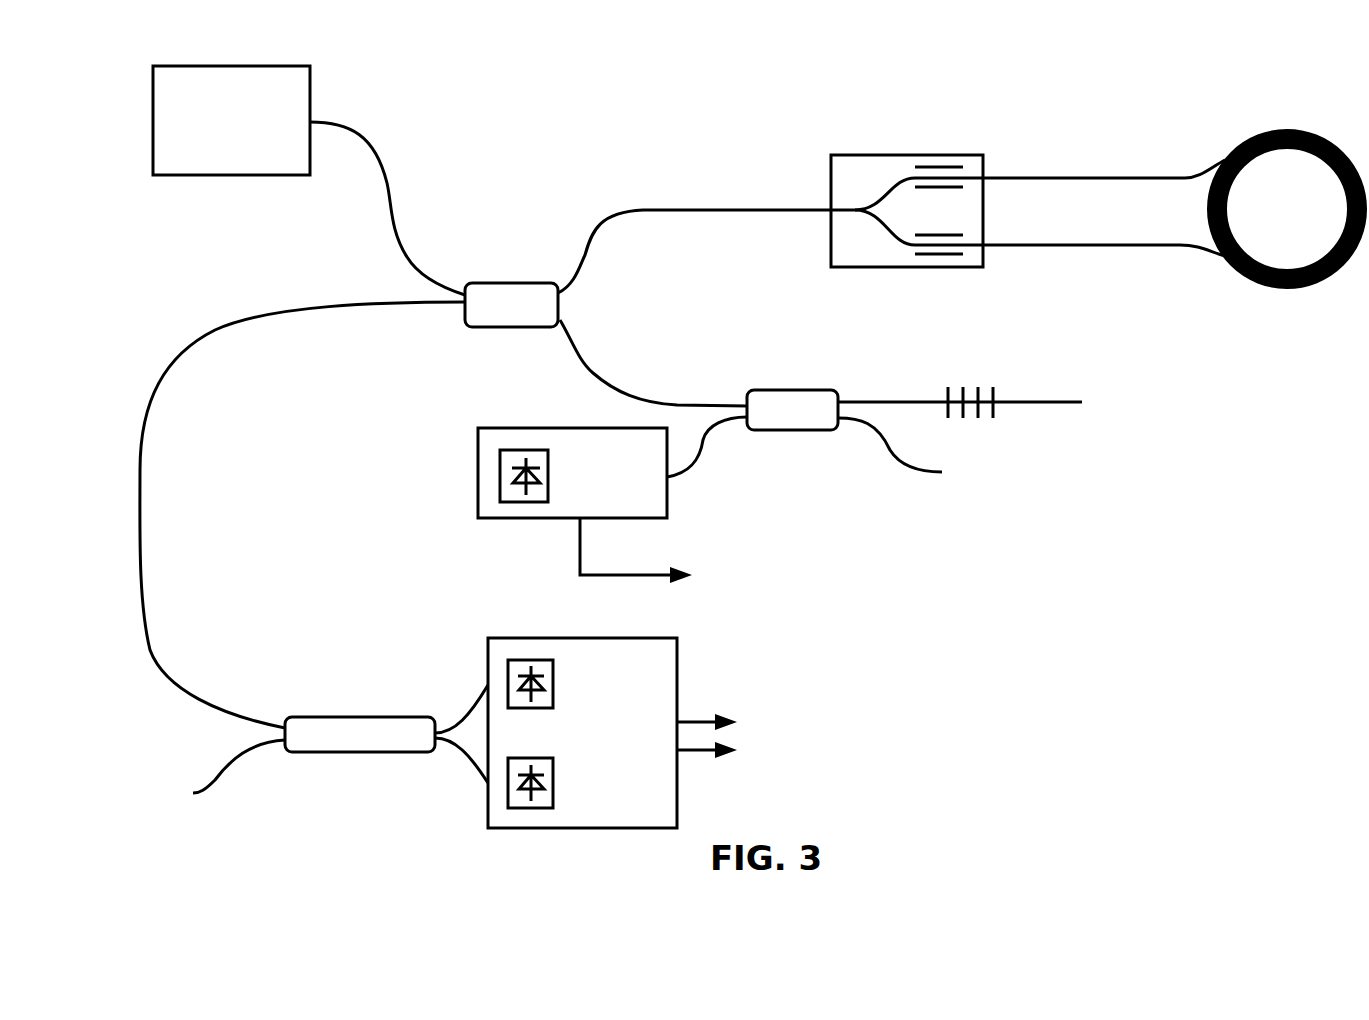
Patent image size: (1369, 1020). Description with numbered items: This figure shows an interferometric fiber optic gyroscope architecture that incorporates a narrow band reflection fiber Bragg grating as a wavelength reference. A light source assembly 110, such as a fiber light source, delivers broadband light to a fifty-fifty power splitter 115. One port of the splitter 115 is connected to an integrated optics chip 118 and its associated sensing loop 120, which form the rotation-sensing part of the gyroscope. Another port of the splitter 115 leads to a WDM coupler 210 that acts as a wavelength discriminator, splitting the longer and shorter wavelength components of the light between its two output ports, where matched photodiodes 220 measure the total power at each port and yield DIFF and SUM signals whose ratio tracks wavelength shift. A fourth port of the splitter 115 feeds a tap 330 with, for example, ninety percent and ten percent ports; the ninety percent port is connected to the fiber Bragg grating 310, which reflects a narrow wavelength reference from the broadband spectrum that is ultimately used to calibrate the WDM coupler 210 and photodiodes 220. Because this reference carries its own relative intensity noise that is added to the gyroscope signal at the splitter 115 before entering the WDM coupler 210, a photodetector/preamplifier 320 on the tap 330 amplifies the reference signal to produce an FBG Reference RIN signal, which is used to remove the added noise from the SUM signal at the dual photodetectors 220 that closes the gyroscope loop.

The light source assembly 110 is at (228, 175).
The 50/50 power splitter 115 is at (498, 280).
The integrated optics chip 118 is at (848, 155).
The sensing loop 120 is at (1295, 290).
The tap 330 is at (762, 392).
The fiber Bragg grating 310 is at (1000, 392).
The photodetector/preamplifier 320 is at (508, 428).
The matched photodiodes 220 is at (519, 636).
The WDM coupler 210 is at (353, 752).